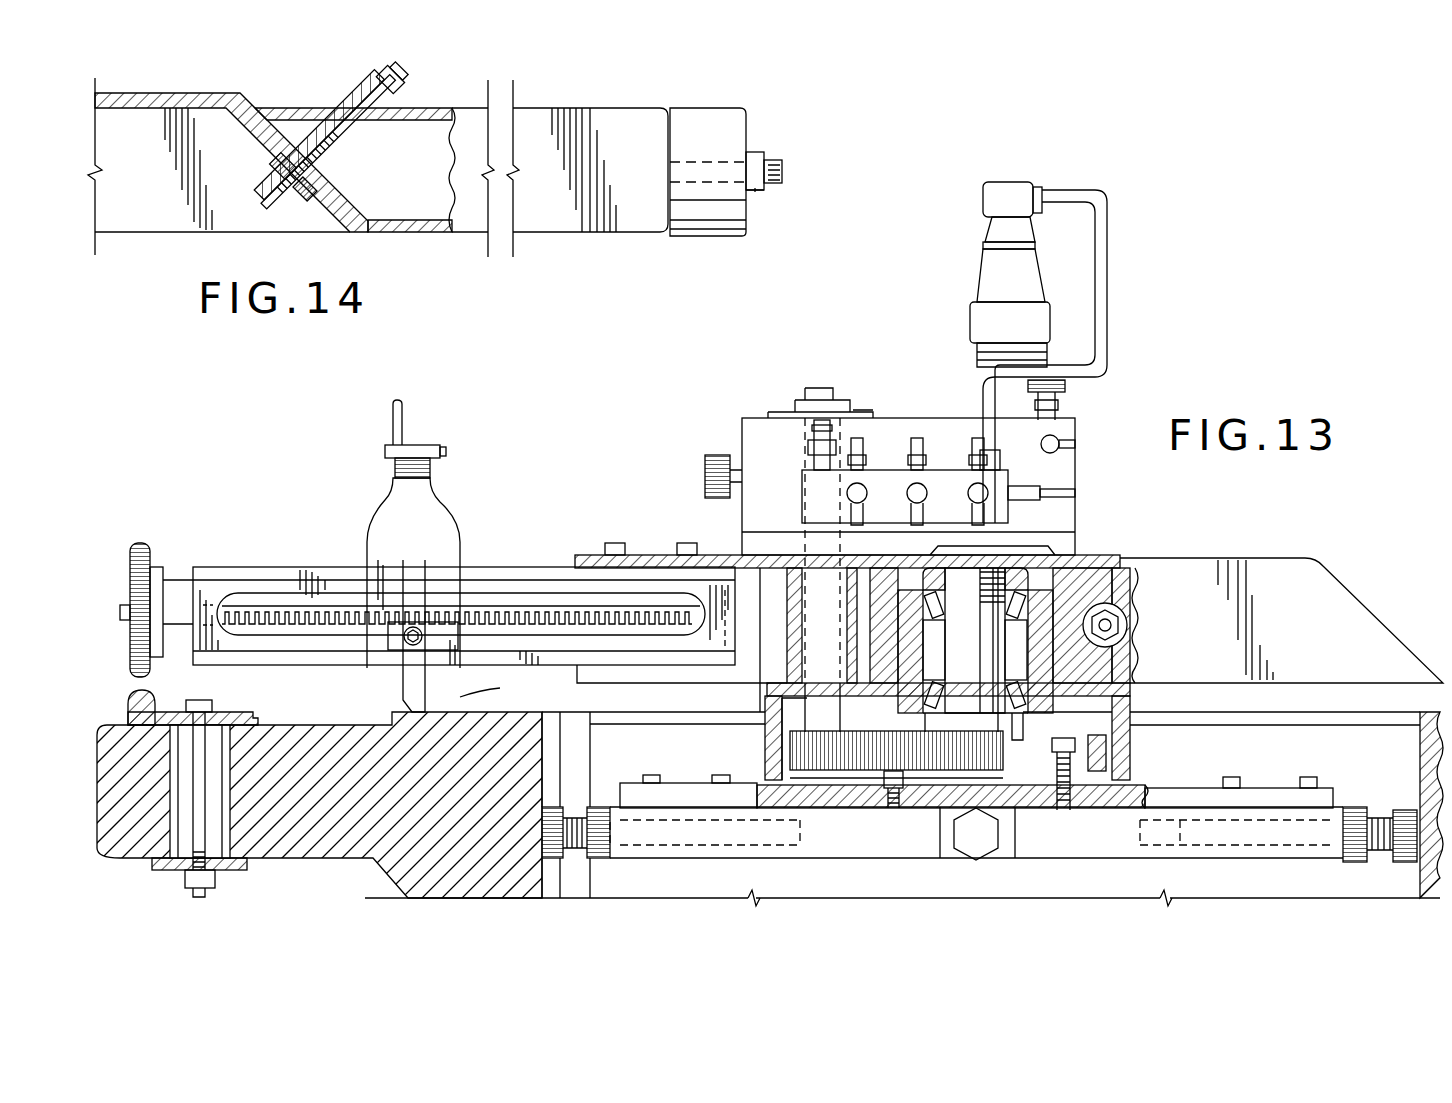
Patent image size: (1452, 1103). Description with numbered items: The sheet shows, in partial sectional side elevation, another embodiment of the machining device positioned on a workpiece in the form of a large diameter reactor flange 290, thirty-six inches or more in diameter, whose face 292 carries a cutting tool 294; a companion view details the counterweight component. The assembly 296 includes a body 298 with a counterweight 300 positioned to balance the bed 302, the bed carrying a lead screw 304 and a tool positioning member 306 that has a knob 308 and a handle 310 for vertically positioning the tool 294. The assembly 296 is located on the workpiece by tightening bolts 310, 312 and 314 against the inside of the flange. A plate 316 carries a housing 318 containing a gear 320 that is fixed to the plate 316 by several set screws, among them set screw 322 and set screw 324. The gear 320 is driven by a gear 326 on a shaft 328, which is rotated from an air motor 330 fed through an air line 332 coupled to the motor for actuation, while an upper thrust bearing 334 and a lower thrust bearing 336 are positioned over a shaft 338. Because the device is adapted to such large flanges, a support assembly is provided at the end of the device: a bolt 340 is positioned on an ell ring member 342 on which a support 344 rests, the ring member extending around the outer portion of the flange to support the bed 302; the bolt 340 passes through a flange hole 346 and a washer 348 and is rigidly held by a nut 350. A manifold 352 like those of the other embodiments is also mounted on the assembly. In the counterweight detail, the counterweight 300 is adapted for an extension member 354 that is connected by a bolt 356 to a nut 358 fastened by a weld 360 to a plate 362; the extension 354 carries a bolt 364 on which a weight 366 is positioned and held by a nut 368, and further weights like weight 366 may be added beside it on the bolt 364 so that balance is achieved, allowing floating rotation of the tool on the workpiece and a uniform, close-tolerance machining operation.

In FIG. 13, the reactor flange 290 is at (298, 718).
In FIG. 13, the face 292 is at (623, 681).
In FIG. 13, the cutting tool 294 is at (410, 690).
In FIG. 14, the assembly 296 is at (139, 88).
In FIG. 13, the assembly 296 is at (755, 408).
In FIG. 13, the body 298 is at (637, 555).
In FIG. 14, the counterweight 300 is at (212, 93).
In FIG. 13, the counterweight 300 is at (1284, 575).
In FIG. 13, the bed 302 is at (229, 560).
In FIG. 13, the lead screw 304 is at (282, 605).
In FIG. 13, the tool positioning member 306 is at (430, 527).
In FIG. 13, the knob 308 is at (425, 450).
In FIG. 13, the handle 310 is at (392, 416).
In FIG. 13, the bolt 312 is at (975, 840).
In FIG. 13, the bolt 314 is at (1405, 812).
In FIG. 13, the plate 316 is at (1197, 800).
In FIG. 13, the housing 318 is at (1150, 697).
In FIG. 13, the gear 320 is at (1140, 752).
In FIG. 13, the set screw 322 is at (1062, 810).
In FIG. 13, the set screw 324 is at (893, 808).
In FIG. 13, the gear 326 is at (768, 750).
In FIG. 13, the shaft 328 is at (812, 650).
In FIG. 13, the air motor 330 is at (985, 282).
In FIG. 13, the air line 332 is at (1107, 272).
In FIG. 13, the upper thrust bearing 334 is at (1020, 590).
In FIG. 13, the lower thrust bearing 336 is at (1100, 663).
In FIG. 13, the shaft 338 is at (1107, 617).
In FIG. 13, the bolt 340 is at (228, 872).
In FIG. 13, the ell ring member 342 is at (135, 692).
In FIG. 13, the support 344 is at (143, 545).
In FIG. 13, the flange hole 346 is at (222, 745).
In FIG. 13, the washer 348 is at (157, 872).
In FIG. 13, the nut 350 is at (198, 878).
In FIG. 13, the manifold 352 is at (893, 472).
In FIG. 14, the extension member 354 is at (622, 118).
In FIG. 14, the bolt 356 is at (350, 133).
In FIG. 14, the nut 358 is at (292, 187).
In FIG. 14, the weld 360 is at (311, 193).
In FIG. 14, the plate 362 is at (297, 112).
In FIG. 14, the bolt 364 is at (790, 163).
In FIG. 14, the weight 366 is at (720, 115).
In FIG. 14, the nut 368 is at (760, 190).